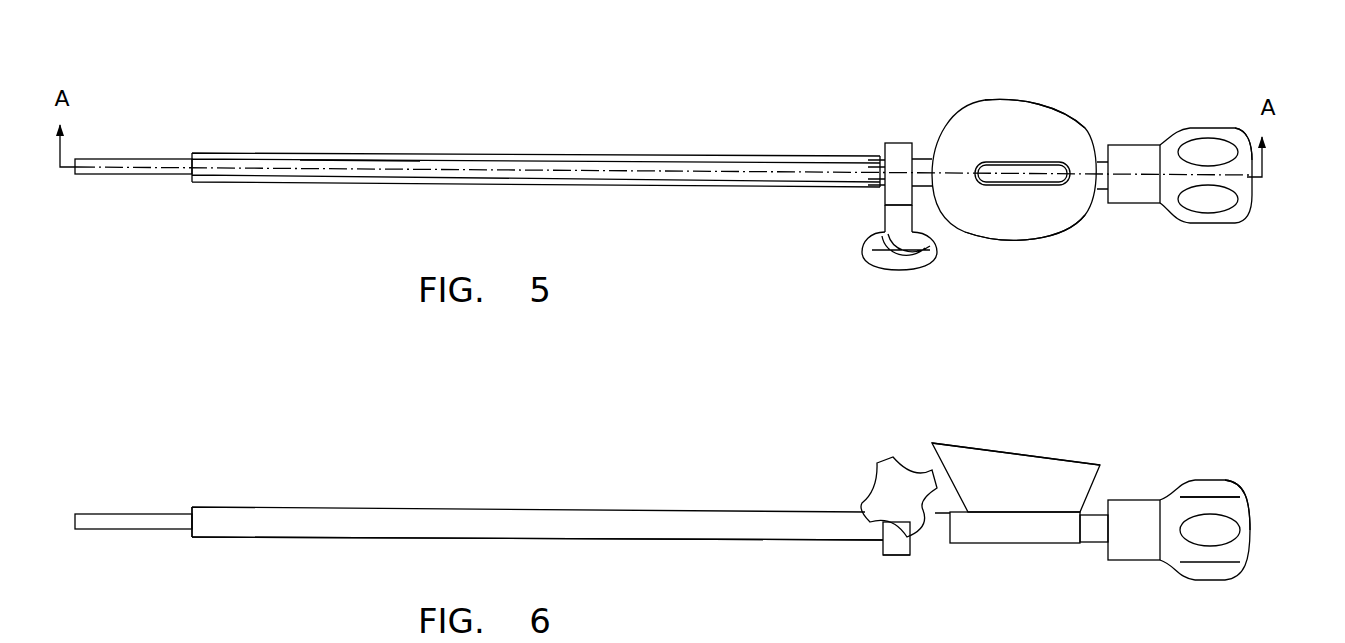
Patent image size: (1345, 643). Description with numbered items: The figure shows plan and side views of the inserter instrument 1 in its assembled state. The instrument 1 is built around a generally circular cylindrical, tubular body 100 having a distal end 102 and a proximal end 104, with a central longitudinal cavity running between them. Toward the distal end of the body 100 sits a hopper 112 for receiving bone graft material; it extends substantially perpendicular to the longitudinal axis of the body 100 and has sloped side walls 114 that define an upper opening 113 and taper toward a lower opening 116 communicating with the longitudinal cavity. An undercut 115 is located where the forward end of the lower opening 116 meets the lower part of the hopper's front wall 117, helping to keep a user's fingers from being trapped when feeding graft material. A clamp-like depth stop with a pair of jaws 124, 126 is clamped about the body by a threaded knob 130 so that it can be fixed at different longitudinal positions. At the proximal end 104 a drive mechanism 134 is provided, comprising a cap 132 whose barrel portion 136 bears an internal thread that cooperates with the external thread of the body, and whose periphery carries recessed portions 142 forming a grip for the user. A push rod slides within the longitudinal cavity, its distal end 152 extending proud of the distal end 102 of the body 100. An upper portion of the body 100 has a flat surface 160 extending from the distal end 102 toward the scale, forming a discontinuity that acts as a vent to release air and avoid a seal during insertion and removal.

In FIG. 5, the instrument 1 is at (718, 145).
In FIG. 6, the instrument 1 is at (667, 498).
In FIG. 5, the body 100 is at (560, 147).
In FIG. 6, the body 100 is at (560, 500).
In FIG. 5, the distal end 102 is at (205, 138).
In FIG. 6, the distal end 102 is at (205, 495).
In FIG. 5, the proximal end 104 is at (1113, 125).
In FIG. 6, the proximal end 104 is at (1116, 485).
In FIG. 5, the hopper 112 is at (998, 95).
In FIG. 6, the hopper 112 is at (975, 440).
In FIG. 5, the upper opening 113 is at (1035, 130).
In FIG. 6, the upper opening 113 is at (1035, 450).
In FIG. 5, the sloped side walls 114 is at (1038, 240).
In FIG. 6, the undercut 115 is at (973, 642).
In FIG. 5, the lower opening 116 is at (990, 186).
In FIG. 6, the lower opening 116 is at (1057, 642).
In FIG. 6, the front wall 117 is at (923, 642).
In FIG. 5, the jaw 124 is at (883, 197).
In FIG. 5, the jaw 126 is at (895, 143).
In FIG. 5, the threaded knob 130 is at (898, 270).
In FIG. 6, the threaded knob 130 is at (890, 495).
In FIG. 5, the cap 132 is at (1203, 105).
In FIG. 6, the cap 132 is at (1210, 470).
In FIG. 5, the drive mechanism 134 is at (1228, 135).
In FIG. 6, the drive mechanism 134 is at (1250, 510).
In FIG. 5, the barrel portion 136 is at (1138, 145).
In FIG. 6, the barrel portion 136 is at (1135, 500).
In FIG. 6, the recessed portions 142 is at (1222, 490).
In FIG. 6, the distal end 152 is at (112, 516).
In FIG. 5, the flat surface 160 is at (360, 155).